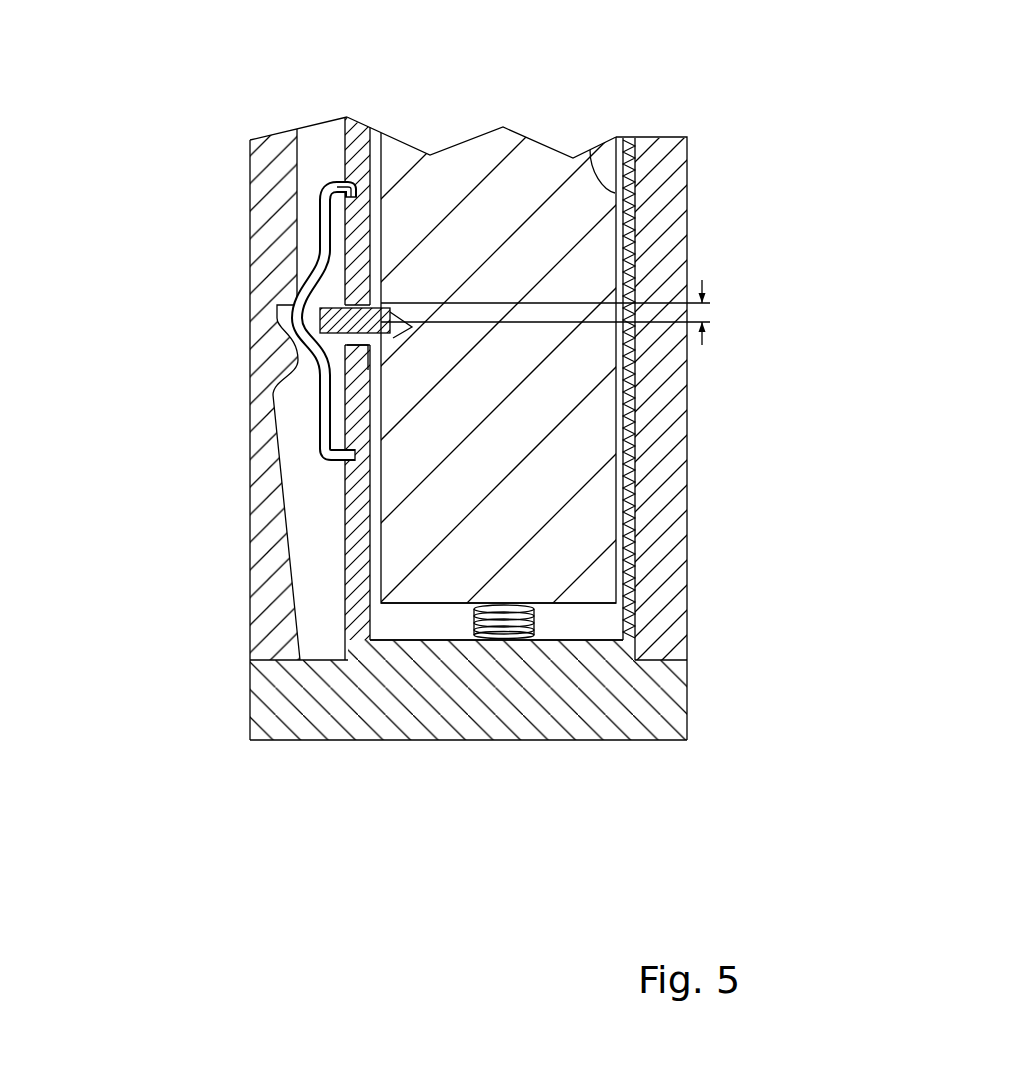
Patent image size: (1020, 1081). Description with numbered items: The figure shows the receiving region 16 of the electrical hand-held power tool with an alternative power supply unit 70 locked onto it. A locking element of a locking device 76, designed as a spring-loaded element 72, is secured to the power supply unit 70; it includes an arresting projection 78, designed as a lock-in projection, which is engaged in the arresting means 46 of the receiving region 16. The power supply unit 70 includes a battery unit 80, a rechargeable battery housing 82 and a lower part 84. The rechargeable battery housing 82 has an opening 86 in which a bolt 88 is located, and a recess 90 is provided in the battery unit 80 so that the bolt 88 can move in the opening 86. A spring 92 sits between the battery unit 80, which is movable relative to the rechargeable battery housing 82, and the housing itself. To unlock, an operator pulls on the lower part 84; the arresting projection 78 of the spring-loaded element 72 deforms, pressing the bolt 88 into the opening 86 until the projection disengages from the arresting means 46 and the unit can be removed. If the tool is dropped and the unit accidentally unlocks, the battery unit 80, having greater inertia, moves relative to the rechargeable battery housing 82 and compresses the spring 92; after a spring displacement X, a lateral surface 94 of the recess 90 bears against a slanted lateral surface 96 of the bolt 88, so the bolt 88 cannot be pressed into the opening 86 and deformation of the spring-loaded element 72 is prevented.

The receiving region 16 is at (590, 150).
The arresting means 46 is at (300, 353).
The power supply unit 70 is at (476, 114).
The spring-loaded element 72 is at (322, 216).
The locking device 76 is at (232, 313).
The arresting projection 78 is at (312, 297).
The battery unit 80 is at (520, 483).
The rechargeable battery housing 82 is at (352, 590).
The lower part 84 is at (603, 705).
The opening 86 is at (348, 180).
The bolt 88 is at (383, 408).
The recess 90 is at (383, 348).
The spring 92 is at (473, 620).
The lateral surface 94 is at (385, 306).
The slanted lateral surface 96 is at (400, 338).